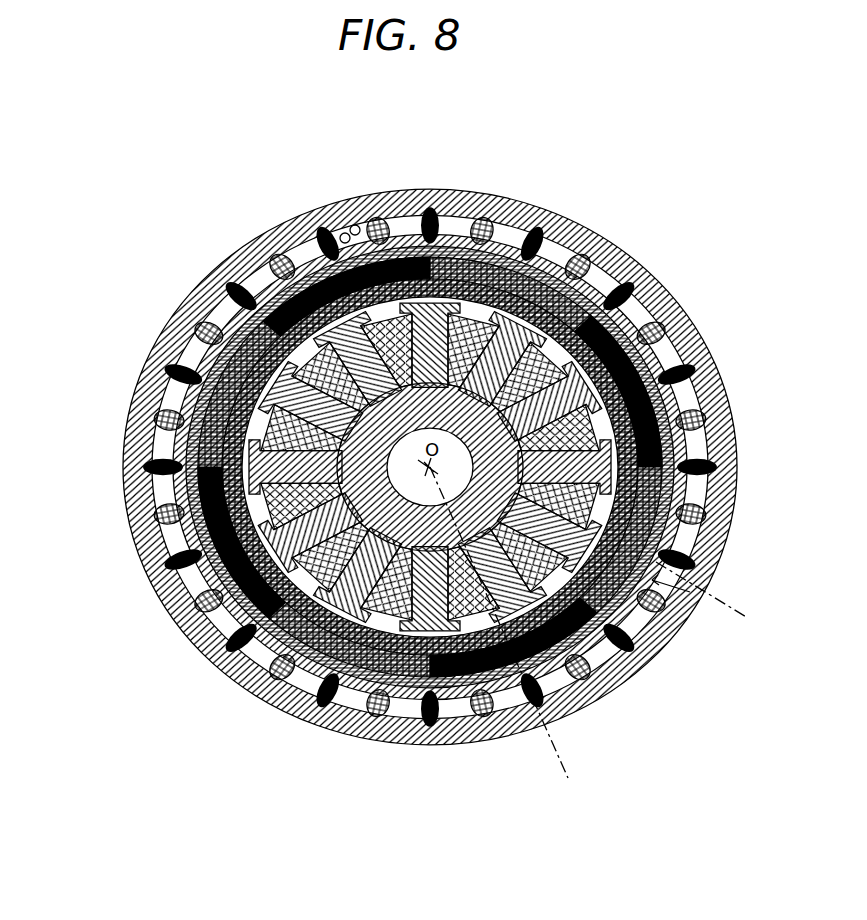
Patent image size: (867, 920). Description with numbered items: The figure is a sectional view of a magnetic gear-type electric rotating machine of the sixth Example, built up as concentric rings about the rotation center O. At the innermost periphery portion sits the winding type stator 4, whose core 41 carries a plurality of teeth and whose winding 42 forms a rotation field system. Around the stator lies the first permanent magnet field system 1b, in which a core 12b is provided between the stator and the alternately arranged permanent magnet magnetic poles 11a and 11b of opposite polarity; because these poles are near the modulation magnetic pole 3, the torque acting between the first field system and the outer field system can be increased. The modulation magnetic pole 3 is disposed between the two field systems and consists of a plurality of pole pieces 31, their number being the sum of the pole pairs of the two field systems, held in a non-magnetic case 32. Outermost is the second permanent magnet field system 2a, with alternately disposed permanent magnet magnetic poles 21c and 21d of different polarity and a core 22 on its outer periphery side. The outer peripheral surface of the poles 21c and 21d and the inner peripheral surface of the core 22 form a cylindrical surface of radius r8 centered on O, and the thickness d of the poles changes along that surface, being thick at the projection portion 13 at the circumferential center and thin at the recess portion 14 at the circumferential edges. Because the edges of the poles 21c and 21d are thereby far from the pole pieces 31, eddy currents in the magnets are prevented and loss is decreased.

The second permanent magnet field system 2a is at (487, 197).
The projection portion 13 is at (320, 220).
The core 22 is at (550, 228).
The permanent magnet magnetic pole 21c is at (608, 290).
The permanent magnet magnetic pole 21d is at (645, 320).
The pole piece 31 is at (641, 583).
The non-magnetic case 32 is at (623, 612).
The modulation magnetic pole 3 is at (670, 487).
The permanent magnet magnetic pole 11b is at (215, 416).
The permanent magnet magnetic pole 11a is at (320, 292).
The first permanent magnet field system 1b is at (263, 333).
The core 12b is at (225, 448).
The winding type stator 4 is at (432, 628).
The core 41 is at (337, 600).
The winding 42 is at (386, 608).
The recess portion 14 is at (352, 228).
The radius r8 is at (499, 622).
The thickness d is at (700, 588).